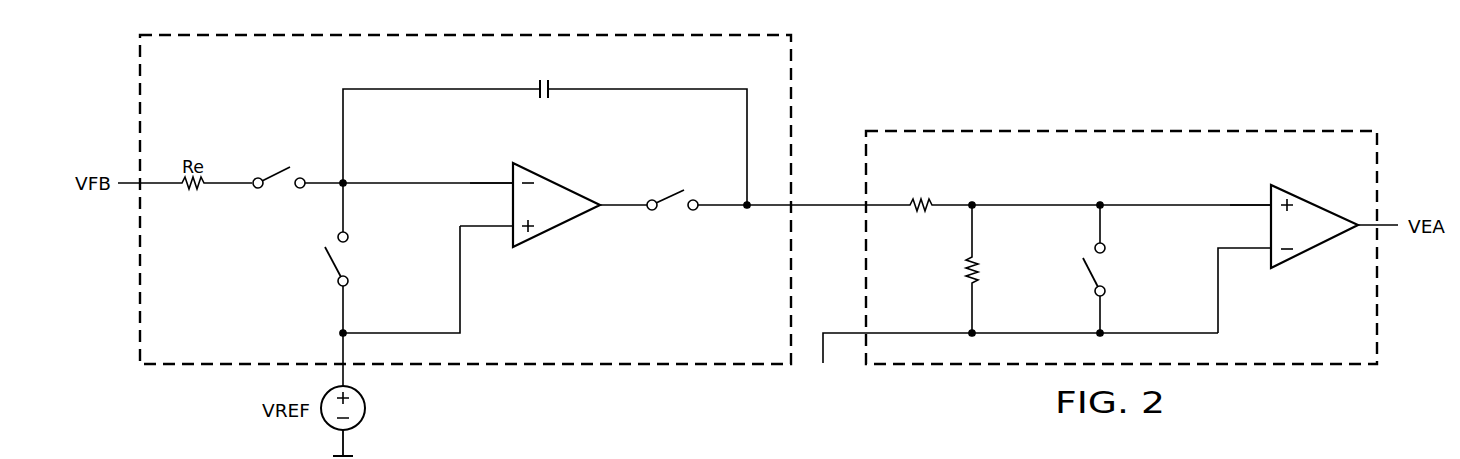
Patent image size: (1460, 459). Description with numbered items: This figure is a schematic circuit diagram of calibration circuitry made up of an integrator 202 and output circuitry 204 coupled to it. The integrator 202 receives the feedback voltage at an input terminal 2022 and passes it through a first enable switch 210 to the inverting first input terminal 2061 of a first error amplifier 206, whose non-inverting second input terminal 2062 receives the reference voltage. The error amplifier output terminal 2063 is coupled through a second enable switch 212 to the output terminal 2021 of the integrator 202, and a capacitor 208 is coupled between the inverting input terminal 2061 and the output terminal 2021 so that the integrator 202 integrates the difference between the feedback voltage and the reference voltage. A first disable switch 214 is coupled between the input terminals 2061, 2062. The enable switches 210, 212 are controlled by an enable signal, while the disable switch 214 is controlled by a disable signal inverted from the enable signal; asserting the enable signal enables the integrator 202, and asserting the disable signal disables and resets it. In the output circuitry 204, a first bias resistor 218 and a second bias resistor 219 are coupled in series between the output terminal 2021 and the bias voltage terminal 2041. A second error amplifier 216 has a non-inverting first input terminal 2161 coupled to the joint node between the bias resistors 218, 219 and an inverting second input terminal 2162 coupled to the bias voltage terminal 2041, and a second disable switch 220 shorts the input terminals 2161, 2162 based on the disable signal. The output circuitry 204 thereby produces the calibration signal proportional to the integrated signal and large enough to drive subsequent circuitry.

The integrator 202 is at (792, 110).
The output circuitry 204 is at (1172, 130).
The input terminal 2022 is at (150, 185).
The first enable switch 210 is at (277, 170).
The capacitor 208 is at (548, 100).
The first error amplifier 206 is at (555, 227).
The first input terminal 2061 is at (507, 182).
The second input terminal 2062 is at (502, 229).
The error amplifier output terminal 2063 is at (611, 203).
The second enable switch 212 is at (672, 196).
The output terminal 2021 is at (781, 208).
The first disable switch 214 is at (331, 262).
The first bias resistor Rbias1 218 is at (915, 199).
The second bias resistor Rbias2 219 is at (966, 270).
The second disable switch 220 is at (1088, 274).
The bias voltage terminal Vbias 2041 is at (856, 330).
The second error amplifier 216 is at (1311, 250).
The first input terminal 2161 is at (1263, 204).
The second input terminal 2162 is at (1263, 253).